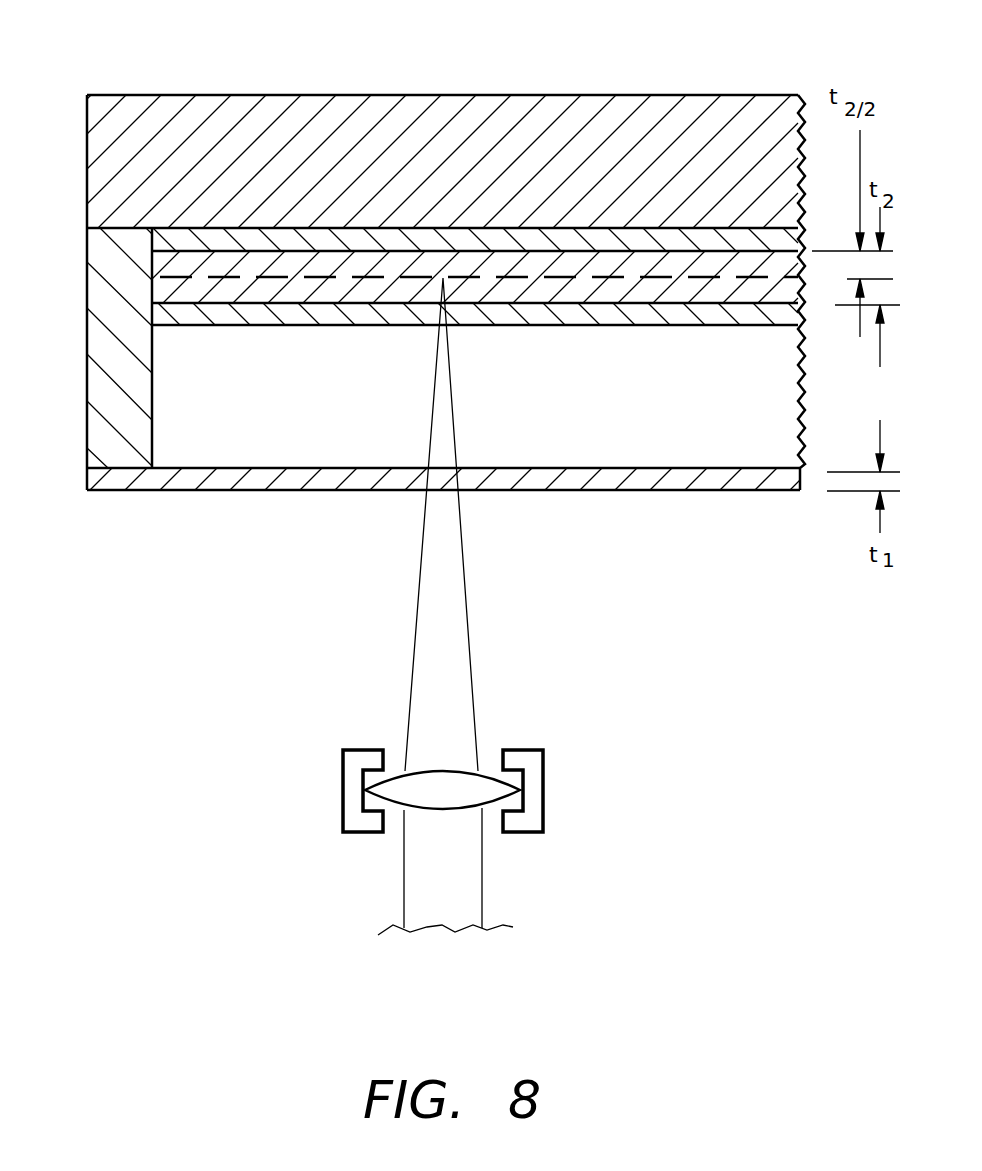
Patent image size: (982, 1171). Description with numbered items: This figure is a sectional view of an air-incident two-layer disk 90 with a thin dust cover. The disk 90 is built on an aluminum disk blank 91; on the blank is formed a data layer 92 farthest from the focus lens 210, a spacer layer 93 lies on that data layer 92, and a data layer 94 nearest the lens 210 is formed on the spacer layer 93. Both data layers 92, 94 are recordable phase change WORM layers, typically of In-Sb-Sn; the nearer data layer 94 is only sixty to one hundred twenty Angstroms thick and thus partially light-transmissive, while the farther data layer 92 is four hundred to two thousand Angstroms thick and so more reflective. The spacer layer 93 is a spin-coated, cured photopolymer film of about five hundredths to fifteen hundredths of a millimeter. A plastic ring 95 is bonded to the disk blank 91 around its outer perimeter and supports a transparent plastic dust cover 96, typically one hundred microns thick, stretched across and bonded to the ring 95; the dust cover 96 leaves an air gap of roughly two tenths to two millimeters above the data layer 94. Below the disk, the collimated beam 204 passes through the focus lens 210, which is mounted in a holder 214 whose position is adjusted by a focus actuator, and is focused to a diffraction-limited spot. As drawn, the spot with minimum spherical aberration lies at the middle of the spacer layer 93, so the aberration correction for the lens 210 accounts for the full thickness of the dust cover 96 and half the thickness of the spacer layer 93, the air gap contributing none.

The multiple data layer disk 90 is at (217, 58).
The aluminum disk blank 91 is at (580, 107).
The data layer 92 is at (785, 245).
The spacer layer 93 is at (783, 292).
The data layer 94 is at (784, 323).
The plastic ring 95 is at (107, 393).
The dust cover 96 is at (250, 482).
The three-component beam 204 is at (470, 878).
The focus lens 210 is at (455, 783).
The holder 214 is at (530, 799).